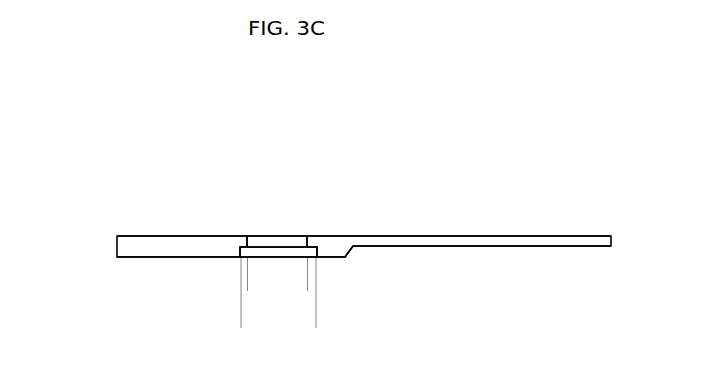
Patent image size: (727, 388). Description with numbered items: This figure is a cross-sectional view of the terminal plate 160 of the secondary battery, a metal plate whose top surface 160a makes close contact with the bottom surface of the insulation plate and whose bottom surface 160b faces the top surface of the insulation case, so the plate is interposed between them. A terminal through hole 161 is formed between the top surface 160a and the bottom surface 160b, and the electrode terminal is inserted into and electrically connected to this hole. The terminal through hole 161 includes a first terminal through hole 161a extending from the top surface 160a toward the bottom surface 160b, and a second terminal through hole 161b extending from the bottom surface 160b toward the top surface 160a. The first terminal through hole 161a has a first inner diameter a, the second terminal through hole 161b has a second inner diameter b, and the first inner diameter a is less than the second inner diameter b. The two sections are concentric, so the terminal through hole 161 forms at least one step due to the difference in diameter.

The terminal plate 160 is at (83, 189).
The top surface 160a is at (570, 236).
The bottom surface 160b is at (570, 246).
The terminal through hole 161 is at (319, 175).
The first terminal through hole 161a is at (303, 243).
The second terminal through hole 161b is at (248, 246).
The first inner diameter a is at (301, 288).
The second inner diameter b is at (309, 324).